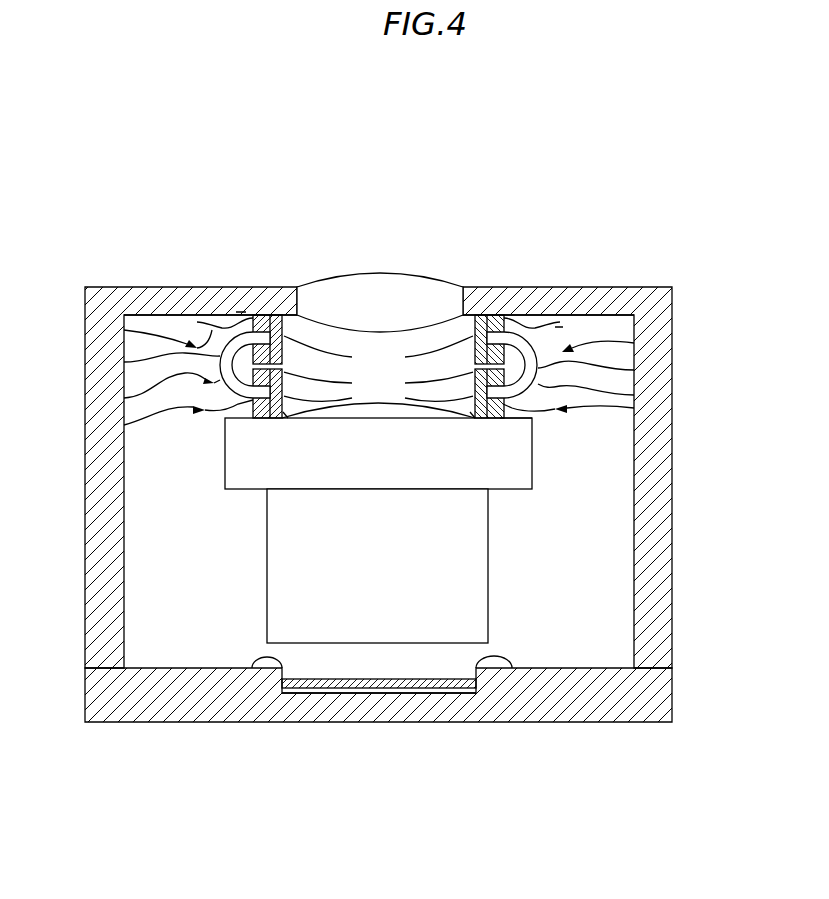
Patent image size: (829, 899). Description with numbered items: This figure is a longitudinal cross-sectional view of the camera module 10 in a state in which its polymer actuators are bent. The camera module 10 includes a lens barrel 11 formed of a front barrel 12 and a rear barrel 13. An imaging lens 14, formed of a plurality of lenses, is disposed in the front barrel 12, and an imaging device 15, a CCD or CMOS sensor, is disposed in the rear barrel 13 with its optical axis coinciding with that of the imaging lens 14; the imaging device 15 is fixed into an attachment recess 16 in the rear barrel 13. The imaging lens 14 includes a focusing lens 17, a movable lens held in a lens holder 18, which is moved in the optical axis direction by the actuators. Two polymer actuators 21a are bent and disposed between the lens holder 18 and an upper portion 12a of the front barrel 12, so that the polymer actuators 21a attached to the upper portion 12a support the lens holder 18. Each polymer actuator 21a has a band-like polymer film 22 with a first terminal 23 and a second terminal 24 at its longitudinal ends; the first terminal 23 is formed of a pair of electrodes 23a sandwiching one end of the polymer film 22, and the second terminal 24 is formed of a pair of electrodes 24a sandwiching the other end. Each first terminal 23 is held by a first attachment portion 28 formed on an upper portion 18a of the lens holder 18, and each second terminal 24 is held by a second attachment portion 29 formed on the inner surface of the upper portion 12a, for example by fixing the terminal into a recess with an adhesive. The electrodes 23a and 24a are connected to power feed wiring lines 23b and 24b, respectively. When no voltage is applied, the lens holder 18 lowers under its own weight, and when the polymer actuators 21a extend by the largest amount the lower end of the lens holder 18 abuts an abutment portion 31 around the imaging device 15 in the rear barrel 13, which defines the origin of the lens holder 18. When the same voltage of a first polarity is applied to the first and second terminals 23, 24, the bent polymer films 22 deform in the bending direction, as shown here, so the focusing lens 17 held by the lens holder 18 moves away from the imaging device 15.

The camera module 10 is at (423, 205).
The lens barrel 11 is at (750, 588).
The front barrel 12 is at (655, 606).
The upper portion of the front barrel 12a is at (126, 287).
The rear barrel 13 is at (655, 690).
The imaging lens 14 is at (367, 274).
The imaging device 15 is at (412, 690).
The attachment recess 16 is at (345, 683).
The focusing lens 17 is at (377, 410).
The lens holder 18 is at (280, 567).
The upper portion of the lens holder 18a is at (520, 414).
The polymer actuator 21a is at (124, 330).
The polymer film 22 is at (124, 362).
The first terminal 23 is at (124, 425).
The electrode 23a is at (378, 385).
The power feed wiring line 23b is at (124, 398).
The second terminal 24 is at (240, 298).
The electrode 24a is at (378, 352).
The power feed wiring line 24b is at (222, 328).
The first attachment portion 28 is at (288, 418).
The second attachment portion 29 is at (280, 318).
The abutment portion 31 is at (255, 672).